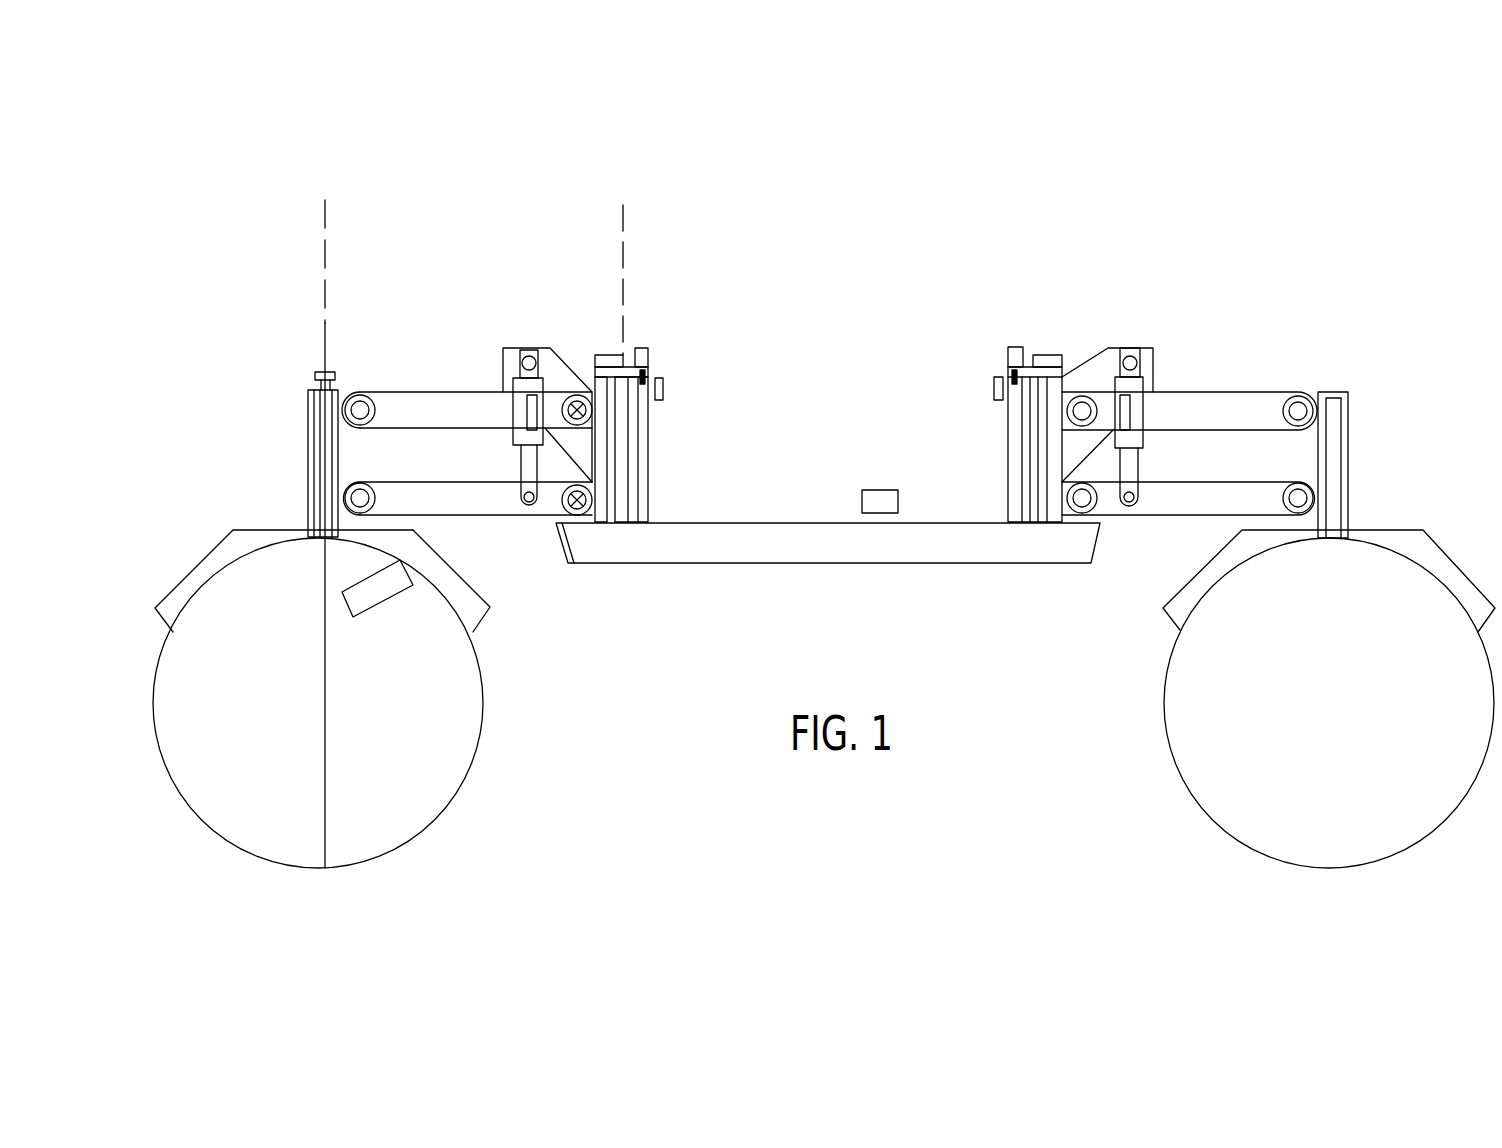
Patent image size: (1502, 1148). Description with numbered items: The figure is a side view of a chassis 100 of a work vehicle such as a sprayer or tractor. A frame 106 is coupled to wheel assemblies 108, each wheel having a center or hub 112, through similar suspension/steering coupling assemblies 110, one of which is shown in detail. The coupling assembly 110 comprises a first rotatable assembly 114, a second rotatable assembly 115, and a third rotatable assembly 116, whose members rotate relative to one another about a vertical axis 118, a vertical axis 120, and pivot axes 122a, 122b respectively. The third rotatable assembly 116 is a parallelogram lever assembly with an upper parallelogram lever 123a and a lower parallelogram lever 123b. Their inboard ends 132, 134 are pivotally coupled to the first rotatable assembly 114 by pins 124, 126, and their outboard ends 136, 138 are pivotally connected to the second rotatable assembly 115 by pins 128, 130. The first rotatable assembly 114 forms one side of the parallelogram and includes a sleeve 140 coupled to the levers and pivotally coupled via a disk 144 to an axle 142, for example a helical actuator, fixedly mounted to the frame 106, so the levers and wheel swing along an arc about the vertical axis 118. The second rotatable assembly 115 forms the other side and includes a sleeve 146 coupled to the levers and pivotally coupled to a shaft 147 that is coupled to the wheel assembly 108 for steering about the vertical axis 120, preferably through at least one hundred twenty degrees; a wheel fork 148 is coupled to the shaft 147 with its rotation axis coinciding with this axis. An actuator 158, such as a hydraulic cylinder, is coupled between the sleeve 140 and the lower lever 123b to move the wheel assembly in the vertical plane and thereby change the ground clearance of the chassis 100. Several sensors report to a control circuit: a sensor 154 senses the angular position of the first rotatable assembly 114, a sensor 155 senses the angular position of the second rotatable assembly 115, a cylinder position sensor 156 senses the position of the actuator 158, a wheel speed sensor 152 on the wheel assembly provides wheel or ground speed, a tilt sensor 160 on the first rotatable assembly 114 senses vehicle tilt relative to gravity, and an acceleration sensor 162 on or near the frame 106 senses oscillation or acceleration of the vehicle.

The chassis 100 is at (845, 252).
The frame 106 is at (877, 547).
The wheel assembly 108 is at (243, 590).
The suspension/steering coupling assembly 110 is at (552, 210).
The hub 112 is at (333, 690).
The first rotatable assembly 114 is at (645, 310).
The second rotatable assembly 115 is at (260, 384).
The third rotatable assembly 116 is at (376, 340).
The vertical axis 118 is at (623, 228).
The vertical axis 120 is at (327, 240).
The axis 122a is at (590, 411).
The axis 122b is at (578, 508).
The upper parallelogram lever 123a is at (403, 390).
The lower parallelogram lever 123b is at (485, 517).
The pin 124 is at (580, 395).
The pin 126 is at (557, 523).
The pin 128 is at (352, 395).
The pin 130 is at (353, 500).
The inboard end 132 is at (553, 418).
The inboard end 134 is at (547, 507).
The outboard end 136 is at (383, 430).
The outboard end 138 is at (400, 500).
The sleeve 140 is at (642, 513).
The axle 142 is at (623, 477).
The disk 144 is at (612, 357).
The sleeve 146 is at (308, 405).
The shaft 147 is at (312, 443).
The wheel fork 148 is at (462, 597).
The wheel speed sensor 152 is at (388, 590).
The sensor 154 is at (665, 390).
The sensor 155 is at (313, 375).
The cylinder position sensor 156 is at (528, 410).
The actuator 158 is at (507, 440).
The tilt sensor 160 is at (603, 353).
The acceleration sensor 162 is at (869, 490).